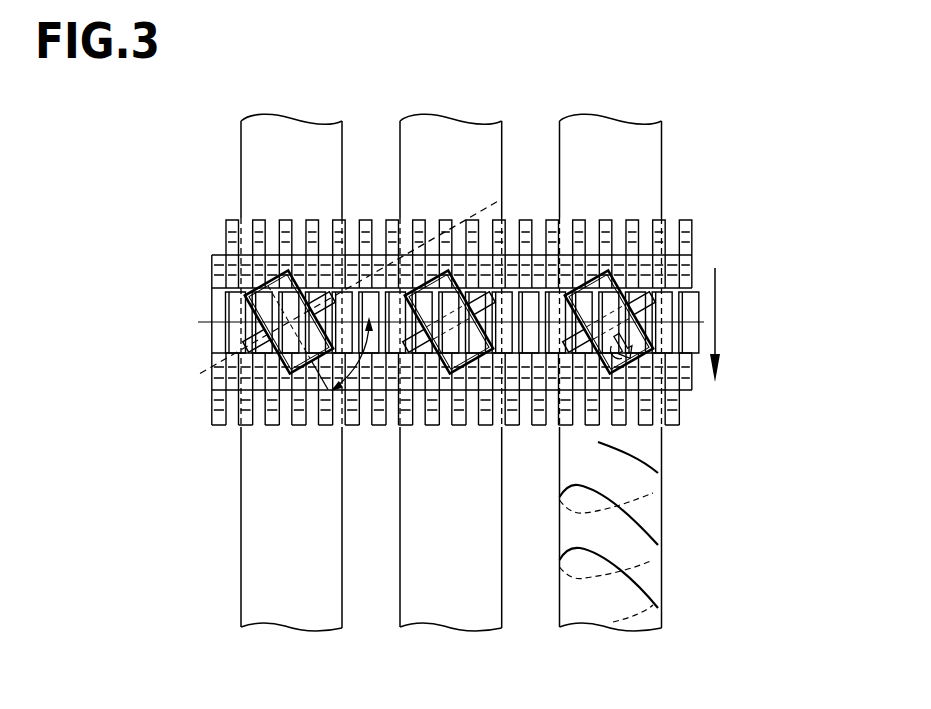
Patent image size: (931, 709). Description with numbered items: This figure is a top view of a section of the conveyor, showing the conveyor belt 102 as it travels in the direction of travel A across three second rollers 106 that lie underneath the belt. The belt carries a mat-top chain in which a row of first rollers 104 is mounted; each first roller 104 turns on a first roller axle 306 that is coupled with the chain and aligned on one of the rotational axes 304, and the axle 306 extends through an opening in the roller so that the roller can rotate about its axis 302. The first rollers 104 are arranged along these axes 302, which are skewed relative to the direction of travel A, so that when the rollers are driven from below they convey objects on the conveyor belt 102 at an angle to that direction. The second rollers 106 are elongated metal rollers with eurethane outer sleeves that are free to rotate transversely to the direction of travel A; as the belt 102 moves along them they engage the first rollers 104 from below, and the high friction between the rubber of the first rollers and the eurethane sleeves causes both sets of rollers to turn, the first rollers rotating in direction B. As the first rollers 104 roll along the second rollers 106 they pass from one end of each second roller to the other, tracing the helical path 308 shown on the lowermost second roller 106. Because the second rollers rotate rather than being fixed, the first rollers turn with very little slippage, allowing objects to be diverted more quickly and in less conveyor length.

The conveyor belt 102 is at (753, 102).
The first rollers 104 is at (614, 281).
The second rollers 106 is at (262, 572).
The axes 302 is at (205, 320).
The rotational axes 304 is at (487, 208).
The first roller axles 306 is at (650, 291).
The helical path 308 is at (647, 572).
The direction of travel A is at (715, 313).
The direction of roller rotation B is at (613, 366).